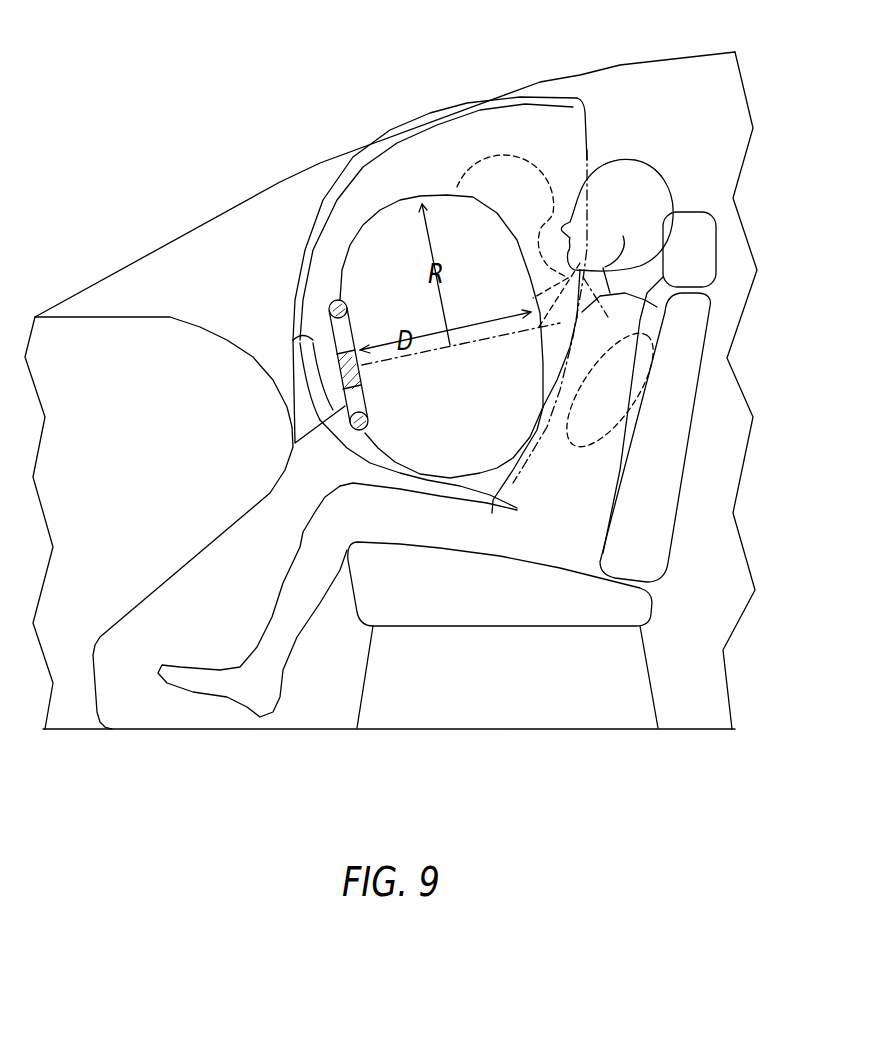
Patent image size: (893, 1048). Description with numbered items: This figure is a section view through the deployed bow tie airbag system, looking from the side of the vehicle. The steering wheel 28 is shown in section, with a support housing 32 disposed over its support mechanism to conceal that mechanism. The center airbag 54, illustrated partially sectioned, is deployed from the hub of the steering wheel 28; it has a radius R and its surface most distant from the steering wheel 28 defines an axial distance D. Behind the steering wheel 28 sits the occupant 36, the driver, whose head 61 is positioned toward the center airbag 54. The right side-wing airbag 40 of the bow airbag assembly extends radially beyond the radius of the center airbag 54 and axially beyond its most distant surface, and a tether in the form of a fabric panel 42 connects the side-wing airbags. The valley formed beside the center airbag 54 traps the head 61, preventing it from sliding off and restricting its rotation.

The steering wheel 28 is at (357, 431).
The support housing 32 is at (190, 449).
The occupant 36 is at (663, 282).
The right side-wing airbag 40 is at (590, 140).
The fabric panel 42 is at (480, 108).
The center airbag 54 is at (424, 476).
The head 61 is at (680, 132).